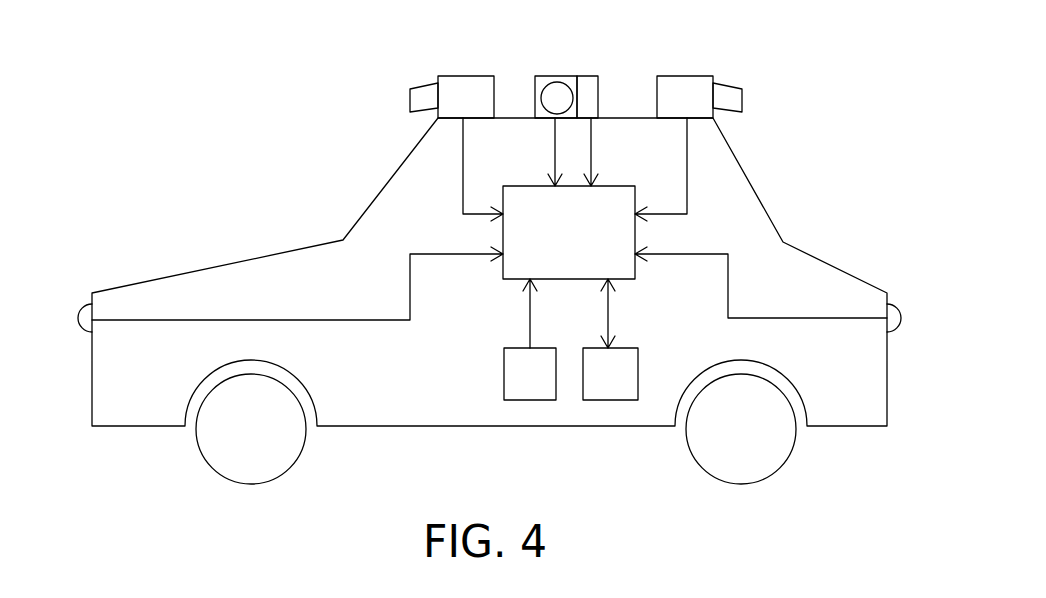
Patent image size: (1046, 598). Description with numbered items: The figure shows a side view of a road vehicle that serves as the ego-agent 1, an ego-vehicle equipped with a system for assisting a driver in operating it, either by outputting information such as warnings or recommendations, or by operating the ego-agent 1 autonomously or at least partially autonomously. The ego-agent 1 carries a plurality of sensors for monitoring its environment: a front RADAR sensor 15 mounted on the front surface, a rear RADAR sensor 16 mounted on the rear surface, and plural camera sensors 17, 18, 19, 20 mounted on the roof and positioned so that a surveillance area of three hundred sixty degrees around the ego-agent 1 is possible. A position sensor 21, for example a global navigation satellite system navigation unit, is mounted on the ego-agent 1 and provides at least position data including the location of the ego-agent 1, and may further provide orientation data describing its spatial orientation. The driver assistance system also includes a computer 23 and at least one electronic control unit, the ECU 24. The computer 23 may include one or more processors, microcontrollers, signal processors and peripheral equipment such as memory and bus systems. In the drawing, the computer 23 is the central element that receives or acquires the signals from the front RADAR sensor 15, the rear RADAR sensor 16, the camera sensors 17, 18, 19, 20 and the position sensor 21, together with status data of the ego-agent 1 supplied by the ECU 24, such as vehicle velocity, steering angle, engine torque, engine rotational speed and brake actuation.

The ego-agent 1 is at (762, 203).
The front RADAR sensor 15 is at (78, 318).
The rear RADAR sensor 16 is at (902, 318).
The camera sensor 17 is at (438, 76).
The camera sensor 18 is at (535, 76).
The camera sensor 19 is at (598, 76).
The camera sensor 20 is at (713, 76).
The position sensor 21 is at (504, 370).
The computer 23 is at (612, 186).
The electronic control unit (ECU) 24 is at (605, 400).